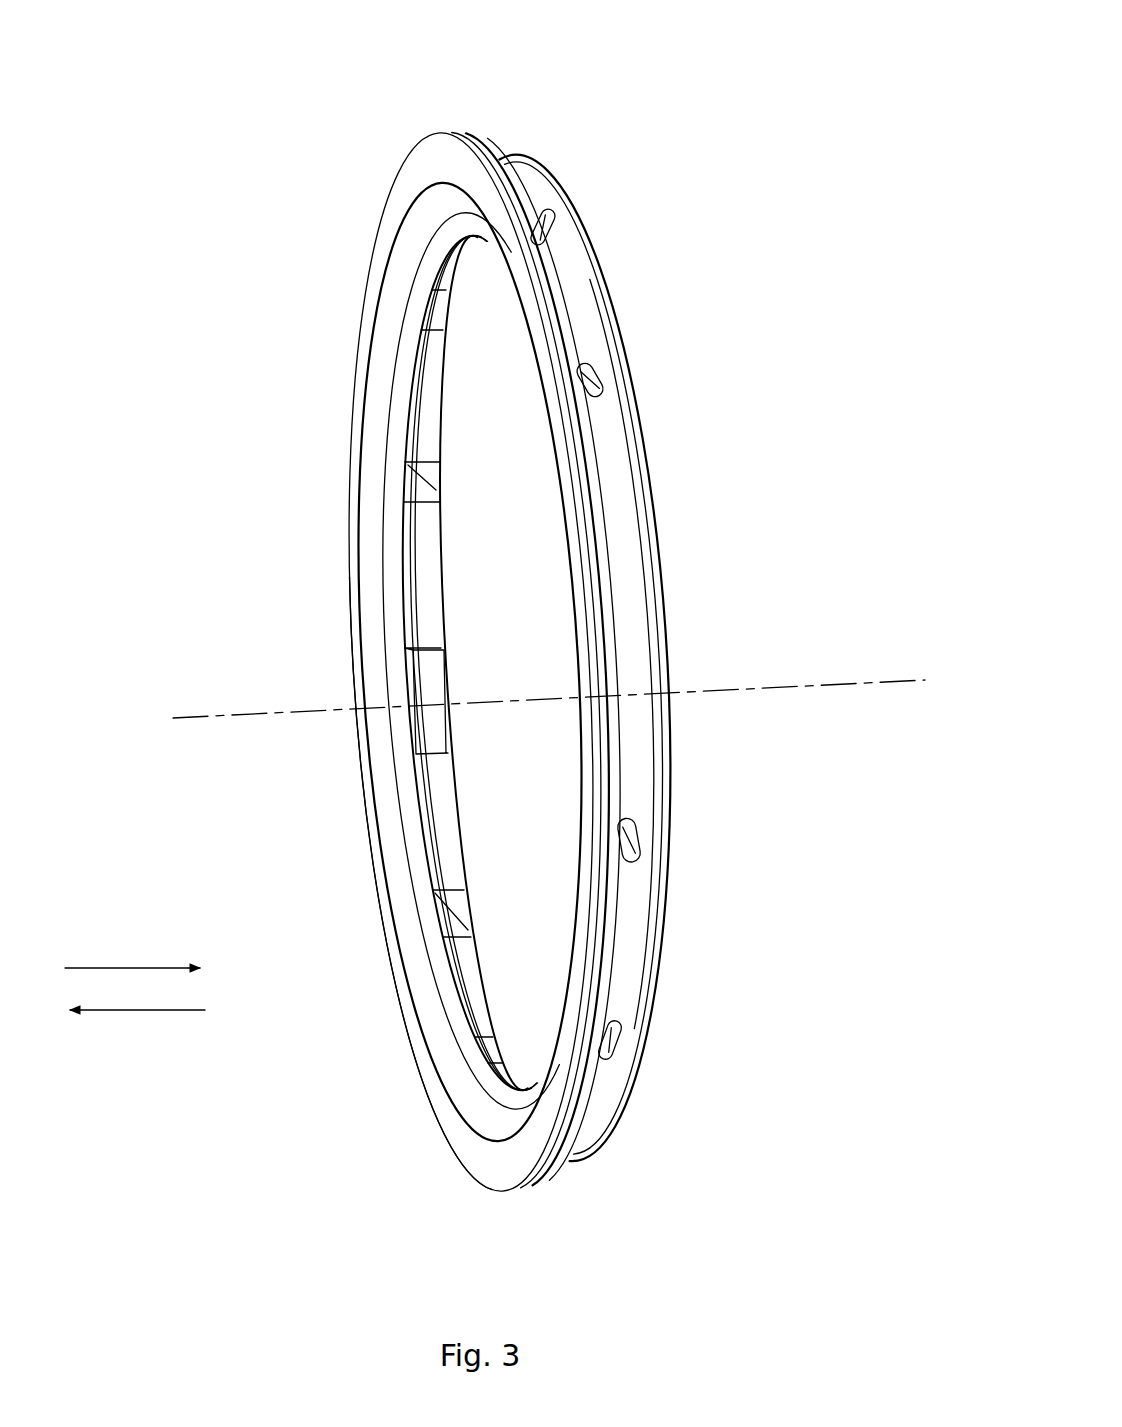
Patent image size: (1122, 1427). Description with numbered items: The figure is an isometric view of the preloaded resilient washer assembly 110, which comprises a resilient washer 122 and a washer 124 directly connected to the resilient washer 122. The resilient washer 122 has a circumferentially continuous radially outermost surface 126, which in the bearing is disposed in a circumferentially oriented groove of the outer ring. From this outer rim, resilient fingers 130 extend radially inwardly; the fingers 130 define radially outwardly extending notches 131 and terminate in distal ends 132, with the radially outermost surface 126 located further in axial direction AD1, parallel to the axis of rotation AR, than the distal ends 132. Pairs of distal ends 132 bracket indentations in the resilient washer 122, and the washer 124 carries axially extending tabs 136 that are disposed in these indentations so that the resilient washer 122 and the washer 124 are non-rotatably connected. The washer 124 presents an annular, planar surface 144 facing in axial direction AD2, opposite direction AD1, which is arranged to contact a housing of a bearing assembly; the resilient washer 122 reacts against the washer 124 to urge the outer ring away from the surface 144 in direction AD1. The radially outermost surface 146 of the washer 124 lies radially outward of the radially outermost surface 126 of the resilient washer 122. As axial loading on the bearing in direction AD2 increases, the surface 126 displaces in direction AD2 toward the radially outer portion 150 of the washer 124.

The preloaded resilient washer assembly 110 is at (663, 62).
The resilient washer 122 is at (605, 258).
The washer 124 is at (368, 200).
The radially outermost surface 126 is at (537, 160).
The resilient fingers 130 is at (612, 490).
The radially outwardly extending notches 131 is at (592, 390).
The distal ends 132 is at (412, 538).
The axially extending tabs 136 is at (428, 682).
The annular surface 144 is at (440, 152).
The radially outermost surface 146 is at (358, 330).
The radially outer portion 150 is at (462, 1162).
The axis of rotation AR is at (885, 690).
The axial direction AD1 is at (108, 965).
The axial direction AD2 is at (130, 1012).